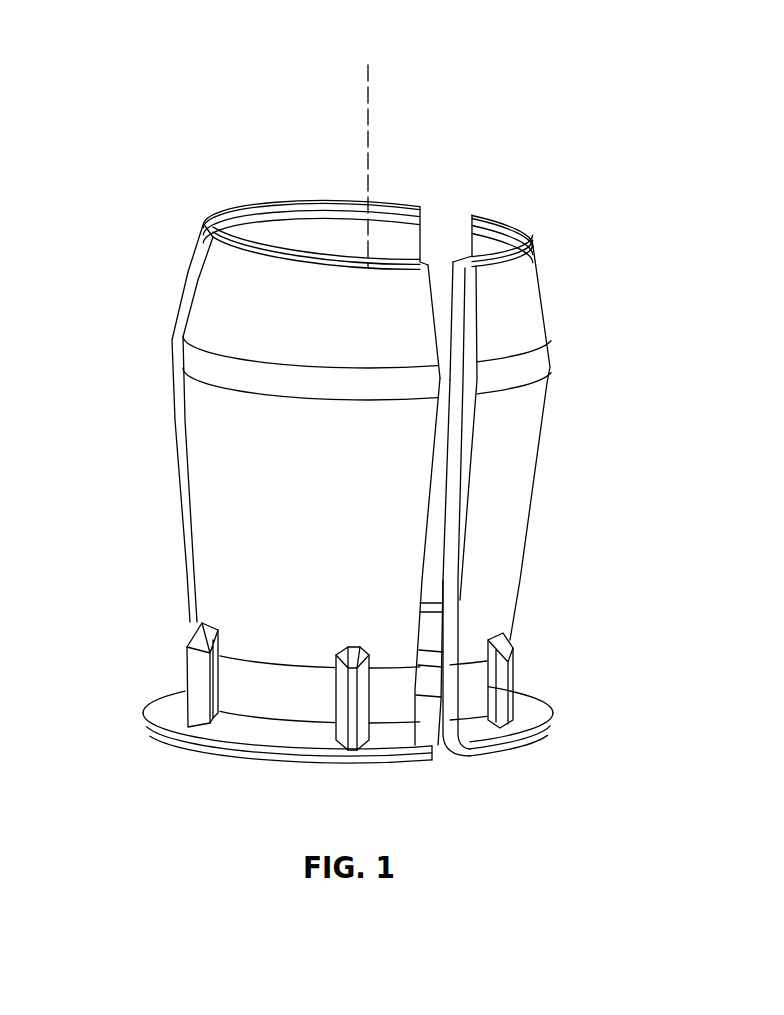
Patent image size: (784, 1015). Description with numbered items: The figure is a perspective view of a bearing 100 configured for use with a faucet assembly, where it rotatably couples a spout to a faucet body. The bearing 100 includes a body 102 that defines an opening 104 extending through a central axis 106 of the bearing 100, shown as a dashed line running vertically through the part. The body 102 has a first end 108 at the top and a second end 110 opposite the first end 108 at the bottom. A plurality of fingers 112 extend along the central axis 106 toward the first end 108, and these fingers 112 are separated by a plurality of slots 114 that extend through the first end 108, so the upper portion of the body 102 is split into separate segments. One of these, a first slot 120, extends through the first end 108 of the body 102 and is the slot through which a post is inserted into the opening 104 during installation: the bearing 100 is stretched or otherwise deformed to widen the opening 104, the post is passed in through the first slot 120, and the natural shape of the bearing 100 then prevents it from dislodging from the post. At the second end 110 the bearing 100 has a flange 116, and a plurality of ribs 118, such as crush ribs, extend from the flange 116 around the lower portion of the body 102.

The bearing 100 is at (120, 50).
The body 102 is at (156, 415).
The opening 104 is at (384, 215).
The central axis 106 is at (370, 112).
The first end 108 is at (318, 188).
The second end 110 is at (199, 772).
The fingers 112 is at (523, 442).
The slots 114 is at (452, 228).
The flange 116 is at (148, 703).
The ribs 118 is at (490, 718).
The first slot 120 is at (445, 523).